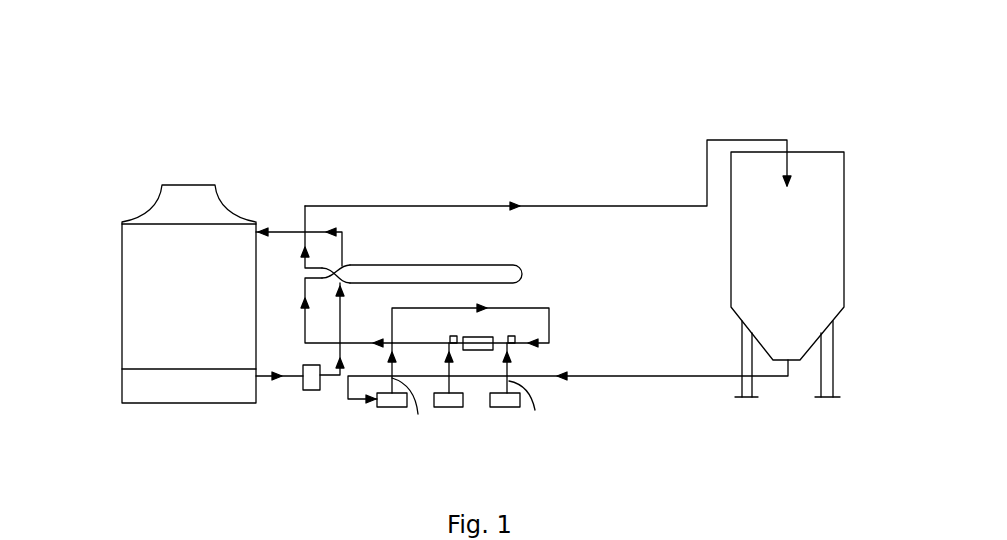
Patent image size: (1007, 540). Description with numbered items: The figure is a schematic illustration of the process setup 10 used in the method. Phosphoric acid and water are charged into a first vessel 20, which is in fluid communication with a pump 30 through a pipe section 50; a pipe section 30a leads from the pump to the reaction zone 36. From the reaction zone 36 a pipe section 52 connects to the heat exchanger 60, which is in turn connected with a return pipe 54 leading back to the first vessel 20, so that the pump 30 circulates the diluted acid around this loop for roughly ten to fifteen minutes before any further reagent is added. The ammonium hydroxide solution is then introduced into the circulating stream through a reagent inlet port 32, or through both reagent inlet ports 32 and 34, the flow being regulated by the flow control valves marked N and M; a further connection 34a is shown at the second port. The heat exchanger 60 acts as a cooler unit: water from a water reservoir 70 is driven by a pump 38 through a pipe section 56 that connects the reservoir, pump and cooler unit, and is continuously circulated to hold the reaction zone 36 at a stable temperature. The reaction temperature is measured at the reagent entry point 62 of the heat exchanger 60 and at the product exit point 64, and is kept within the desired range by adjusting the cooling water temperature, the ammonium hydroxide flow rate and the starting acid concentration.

The process setup 10 is at (626, 112).
The first vessel 20 is at (828, 150).
The pump 30 is at (388, 408).
The pipe section 30a is at (415, 414).
The reagent inlet port 32 is at (445, 410).
The reagent inlet port 34 is at (500, 409).
The third pump connection 34a is at (534, 412).
The reaction zone 36 is at (476, 351).
The pump 38 is at (313, 391).
The pipe section 50 is at (678, 375).
The pipe section 52 is at (305, 312).
The return pipe 54 is at (597, 206).
The pipe section 56 is at (290, 231).
The heat exchanger 60 is at (522, 272).
The reagent entry point 62 is at (342, 266).
The product exit point 64 is at (348, 285).
The water reservoir 70 is at (122, 268).